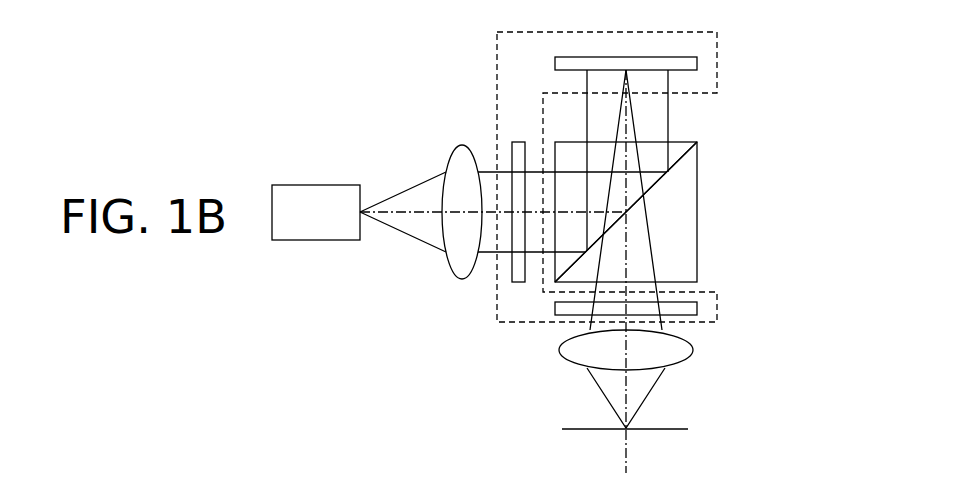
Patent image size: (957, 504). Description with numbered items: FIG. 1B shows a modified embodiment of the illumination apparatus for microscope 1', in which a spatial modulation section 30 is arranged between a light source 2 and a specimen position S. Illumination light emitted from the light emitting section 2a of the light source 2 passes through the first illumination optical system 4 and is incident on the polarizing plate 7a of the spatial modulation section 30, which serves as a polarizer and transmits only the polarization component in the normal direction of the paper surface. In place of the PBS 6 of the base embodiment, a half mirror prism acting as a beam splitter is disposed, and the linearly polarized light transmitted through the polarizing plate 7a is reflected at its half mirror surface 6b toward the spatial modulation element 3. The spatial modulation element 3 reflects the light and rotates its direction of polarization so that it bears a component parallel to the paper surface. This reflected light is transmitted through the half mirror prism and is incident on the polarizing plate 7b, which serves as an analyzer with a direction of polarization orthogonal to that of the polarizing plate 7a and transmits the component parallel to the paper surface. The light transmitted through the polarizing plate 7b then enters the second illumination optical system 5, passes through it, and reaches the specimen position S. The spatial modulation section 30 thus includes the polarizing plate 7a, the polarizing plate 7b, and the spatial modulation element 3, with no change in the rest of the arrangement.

The light source 2 is at (302, 196).
The light emitting section 2a is at (361, 212).
The first illumination optical system 4 is at (468, 160).
The spatial modulation section 30 is at (717, 50).
The polarizing plate 7a is at (523, 142).
The spatial modulation element 3 is at (694, 66).
The PBS 6 is at (683, 233).
The half mirror surface 6b is at (668, 170).
The polarizing plate 7b is at (688, 310).
The second illumination optical system 5 is at (685, 350).
The specimen position S is at (688, 430).
The illumination apparatus for microscope 1' is at (853, 85).